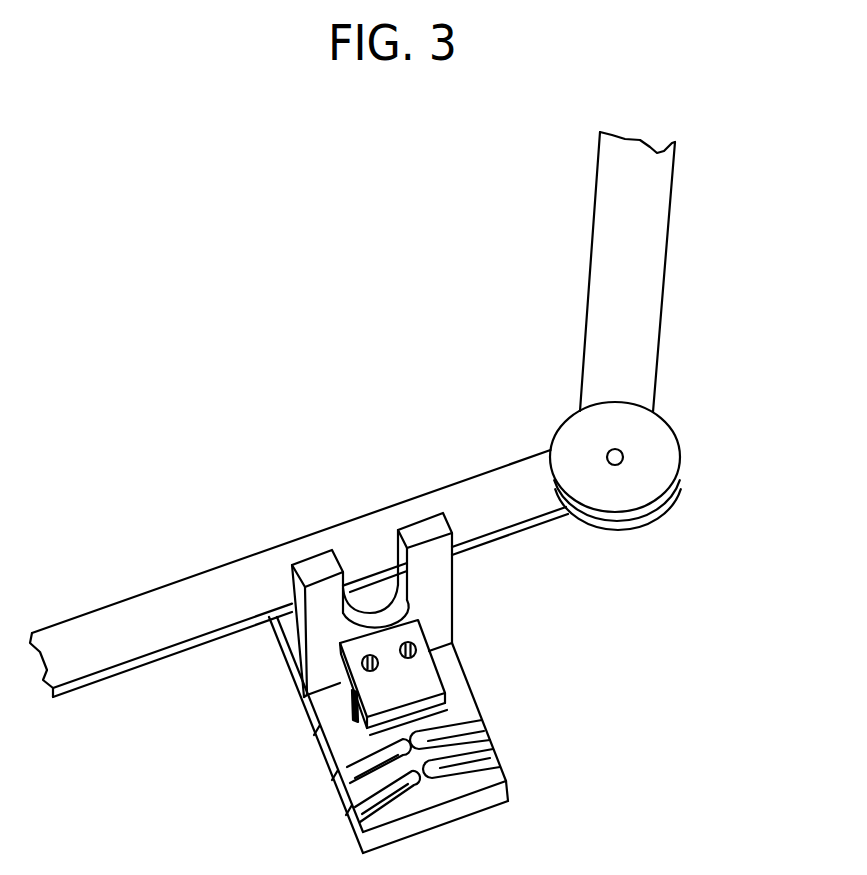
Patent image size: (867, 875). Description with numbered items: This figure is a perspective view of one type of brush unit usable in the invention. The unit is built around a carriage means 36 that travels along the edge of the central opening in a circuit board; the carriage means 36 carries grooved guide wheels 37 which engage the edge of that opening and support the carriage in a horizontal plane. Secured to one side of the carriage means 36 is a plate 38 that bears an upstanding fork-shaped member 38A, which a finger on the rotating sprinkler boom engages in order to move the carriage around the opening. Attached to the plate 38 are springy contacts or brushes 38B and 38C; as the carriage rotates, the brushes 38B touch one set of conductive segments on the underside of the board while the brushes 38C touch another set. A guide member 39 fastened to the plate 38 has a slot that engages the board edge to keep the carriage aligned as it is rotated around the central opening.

The carriage means 36 is at (112, 588).
The grooved guide wheel 37 is at (658, 431).
The plate 38 is at (440, 818).
The upstanding fork-shaped member 38A is at (438, 580).
The springy contacts or brushes 38B is at (455, 730).
The brushes 38C is at (480, 762).
The guide member 39 is at (452, 660).